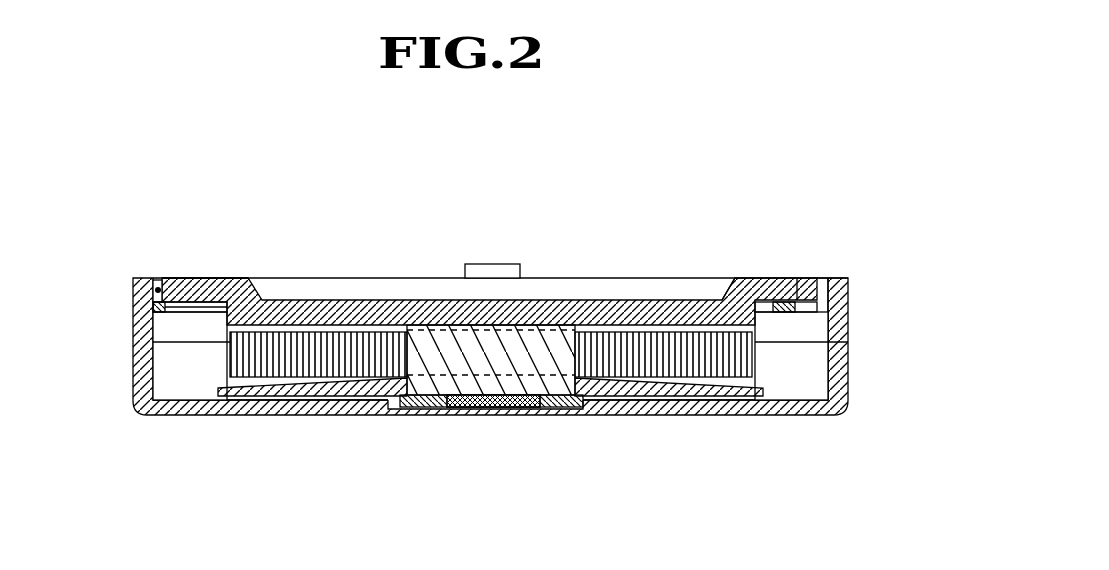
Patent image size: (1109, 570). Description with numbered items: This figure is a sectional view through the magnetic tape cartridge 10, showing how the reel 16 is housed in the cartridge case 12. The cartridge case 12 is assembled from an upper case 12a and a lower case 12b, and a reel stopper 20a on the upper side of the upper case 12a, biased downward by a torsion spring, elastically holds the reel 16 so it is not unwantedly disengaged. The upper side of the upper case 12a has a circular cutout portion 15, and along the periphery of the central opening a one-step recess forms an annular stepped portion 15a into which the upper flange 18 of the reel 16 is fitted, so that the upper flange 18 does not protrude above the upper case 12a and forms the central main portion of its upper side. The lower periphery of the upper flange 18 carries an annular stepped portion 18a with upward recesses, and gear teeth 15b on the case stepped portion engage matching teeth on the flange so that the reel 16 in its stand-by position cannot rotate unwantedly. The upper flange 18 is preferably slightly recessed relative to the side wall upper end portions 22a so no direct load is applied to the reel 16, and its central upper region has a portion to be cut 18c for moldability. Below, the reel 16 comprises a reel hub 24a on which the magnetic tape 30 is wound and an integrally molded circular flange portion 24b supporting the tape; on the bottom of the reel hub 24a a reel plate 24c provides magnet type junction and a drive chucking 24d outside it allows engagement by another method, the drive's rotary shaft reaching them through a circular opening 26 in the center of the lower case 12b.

The magnetic tape cartridge 10 is at (578, 183).
The cartridge case 12 is at (126, 256).
The upper case 12a is at (848, 300).
The lower case 12b is at (700, 415).
The circular cutout portion 15 is at (157, 278).
The annular stepped portion 15a is at (800, 292).
The gear teeth 15b is at (236, 245).
The reel 16 is at (188, 359).
The upper flange 18 is at (752, 278).
The annular stepped portion 18a is at (800, 312).
The portion to be cut 18c is at (720, 278).
The reel stopper 20a is at (490, 264).
The side wall upper end portion 22a is at (838, 278).
The reel hub 24a is at (537, 355).
The circular flange portion 24b is at (372, 392).
The reel plate 24c is at (505, 407).
The drive chucking 24d is at (425, 407).
The circular opening 26 is at (395, 418).
The magnetic tape 30 is at (752, 356).